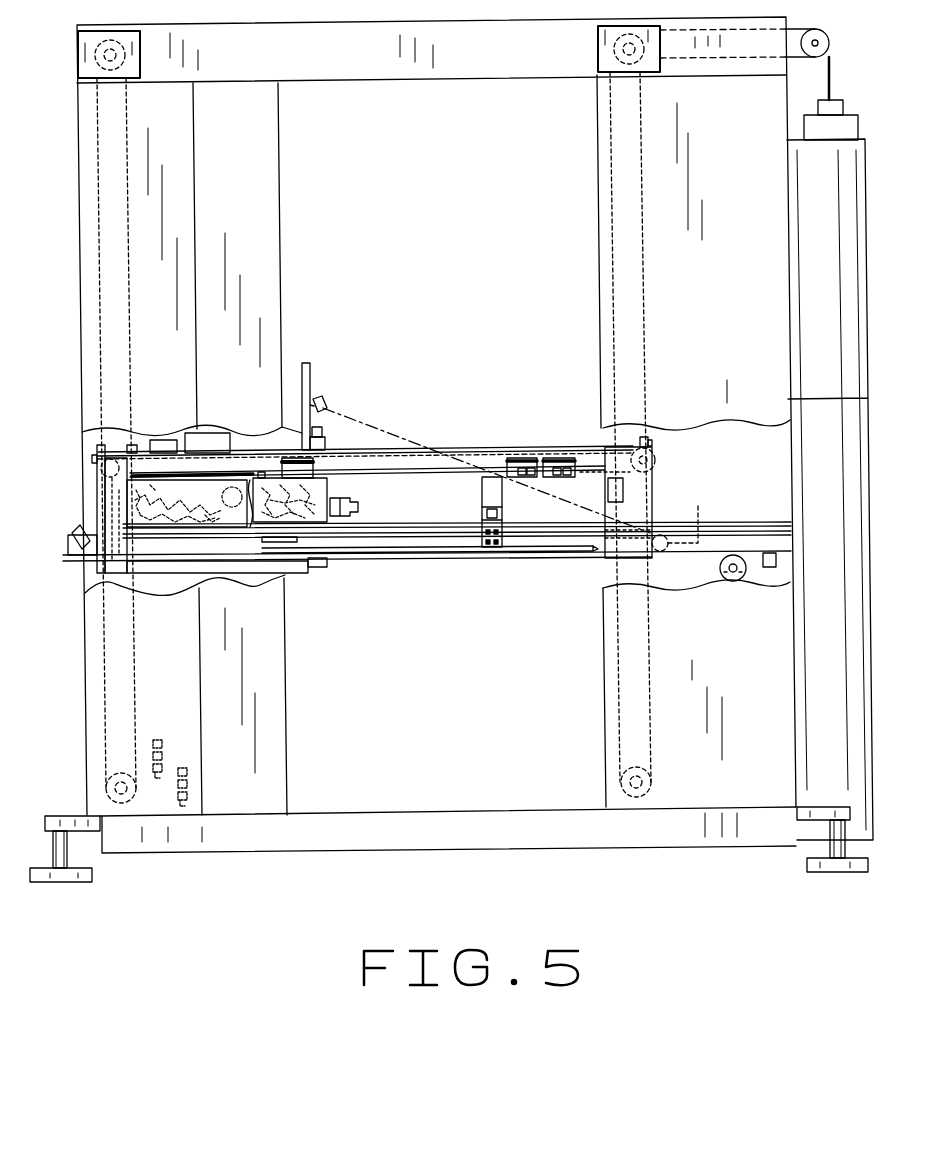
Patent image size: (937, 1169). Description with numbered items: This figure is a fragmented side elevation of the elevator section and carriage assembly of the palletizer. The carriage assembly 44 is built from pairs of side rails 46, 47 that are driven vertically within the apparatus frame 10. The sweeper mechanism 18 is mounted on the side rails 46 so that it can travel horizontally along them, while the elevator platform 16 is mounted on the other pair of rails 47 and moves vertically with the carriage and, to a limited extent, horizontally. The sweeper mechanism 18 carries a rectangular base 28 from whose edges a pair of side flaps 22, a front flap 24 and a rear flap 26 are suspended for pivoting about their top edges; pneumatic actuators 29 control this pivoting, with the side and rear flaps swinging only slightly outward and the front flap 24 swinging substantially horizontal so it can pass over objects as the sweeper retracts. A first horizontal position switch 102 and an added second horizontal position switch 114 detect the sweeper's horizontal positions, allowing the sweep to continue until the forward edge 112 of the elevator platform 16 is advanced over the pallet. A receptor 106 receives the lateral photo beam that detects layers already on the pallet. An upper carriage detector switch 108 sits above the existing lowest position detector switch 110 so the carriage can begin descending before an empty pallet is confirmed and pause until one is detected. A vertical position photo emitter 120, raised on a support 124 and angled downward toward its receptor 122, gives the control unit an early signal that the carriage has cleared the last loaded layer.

The apparatus frame 10 is at (725, 195).
The elevator platform 16 is at (462, 543).
The sweeper mechanism 18 is at (197, 495).
The side flaps 22 is at (266, 498).
The front flap 24 is at (302, 503).
The rear flap 26 is at (104, 495).
The rectangular base 28 is at (145, 477).
The pneumatic actuators 29 is at (145, 510).
The carriage assembly 44 is at (417, 428).
The side rails 46 is at (225, 463).
The side rails 47 is at (533, 543).
The first horizontal position switch 102 is at (527, 463).
The receptor 106 is at (735, 577).
The upper carriage detector switch 108 is at (155, 740).
The lowest position detector switch 110 is at (182, 767).
The forward edge 112 is at (597, 552).
The second horizontal position switch 114 is at (557, 463).
The vertical position photo emitter 120 is at (325, 405).
The receptor 122 is at (686, 515).
The support 124 is at (302, 363).